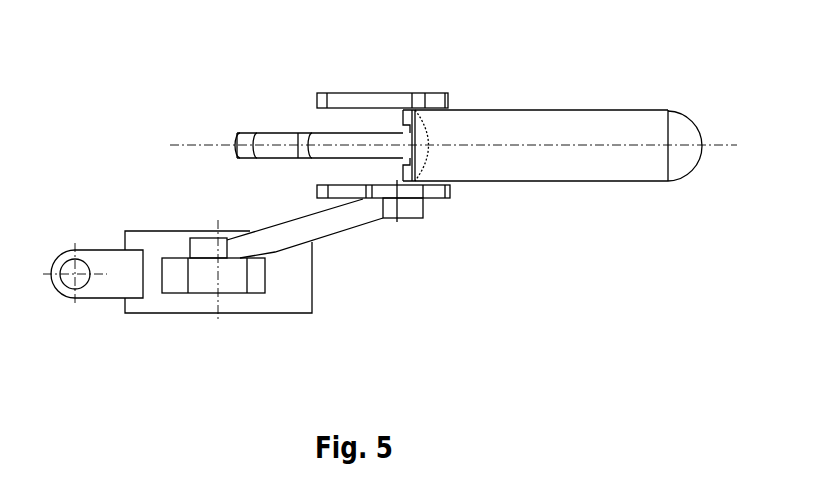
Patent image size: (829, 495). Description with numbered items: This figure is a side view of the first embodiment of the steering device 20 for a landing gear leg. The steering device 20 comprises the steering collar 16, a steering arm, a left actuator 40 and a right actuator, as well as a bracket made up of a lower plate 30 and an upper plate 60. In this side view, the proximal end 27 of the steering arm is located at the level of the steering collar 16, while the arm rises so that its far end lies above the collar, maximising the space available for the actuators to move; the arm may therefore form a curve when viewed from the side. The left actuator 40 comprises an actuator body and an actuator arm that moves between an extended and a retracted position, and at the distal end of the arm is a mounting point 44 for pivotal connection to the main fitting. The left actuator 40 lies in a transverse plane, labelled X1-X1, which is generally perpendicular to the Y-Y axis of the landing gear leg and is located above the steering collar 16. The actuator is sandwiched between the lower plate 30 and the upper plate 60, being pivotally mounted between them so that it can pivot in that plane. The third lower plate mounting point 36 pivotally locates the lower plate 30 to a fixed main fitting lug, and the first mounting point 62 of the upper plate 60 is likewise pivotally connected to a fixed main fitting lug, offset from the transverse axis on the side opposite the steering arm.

The steering device 20 is at (118, 97).
The steering collar 16 is at (158, 303).
The proximal end of the steering arm 27 is at (200, 248).
The lower plate 30 is at (433, 192).
The third lower plate mounting point 36 is at (336, 185).
The left actuator 40 is at (523, 98).
The mounting point 44 is at (274, 147).
The upper plate 60 is at (360, 95).
The first mounting point 62 is at (336, 103).